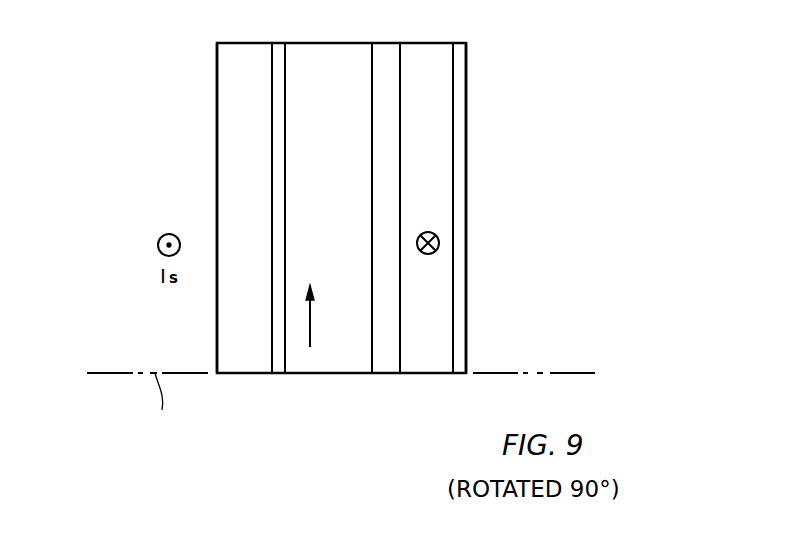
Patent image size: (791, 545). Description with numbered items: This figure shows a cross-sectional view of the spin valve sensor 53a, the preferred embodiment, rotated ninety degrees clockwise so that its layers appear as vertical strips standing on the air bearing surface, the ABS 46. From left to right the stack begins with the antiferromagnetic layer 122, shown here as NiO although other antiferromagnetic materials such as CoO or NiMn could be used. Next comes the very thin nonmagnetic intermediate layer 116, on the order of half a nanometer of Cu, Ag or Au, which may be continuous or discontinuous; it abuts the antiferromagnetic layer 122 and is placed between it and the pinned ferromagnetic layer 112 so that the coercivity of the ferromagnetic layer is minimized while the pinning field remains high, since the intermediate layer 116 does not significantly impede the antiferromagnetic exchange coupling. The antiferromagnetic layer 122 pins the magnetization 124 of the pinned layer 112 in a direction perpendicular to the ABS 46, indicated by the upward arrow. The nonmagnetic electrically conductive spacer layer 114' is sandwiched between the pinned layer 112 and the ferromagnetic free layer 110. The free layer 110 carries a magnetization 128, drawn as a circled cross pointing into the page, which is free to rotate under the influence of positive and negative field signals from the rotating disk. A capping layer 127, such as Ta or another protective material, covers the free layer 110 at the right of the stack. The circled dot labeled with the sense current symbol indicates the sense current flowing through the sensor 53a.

The spin valve sensor 53a is at (533, 42).
The antiferromagnetic layer 122 is at (248, 373).
The nonmagnetic intermediate layer 116 is at (282, 373).
The pinned ferromagnetic layer 112 is at (373, 375).
The magnetization of the pinned layer 124 is at (310, 335).
The spacer layer 114' is at (484, 208).
The ferromagnetic free layer 110 is at (438, 373).
The capping layer 127 is at (466, 268).
The magnetization of the free layer 128 is at (440, 243).
The ABS 46 is at (122, 373).